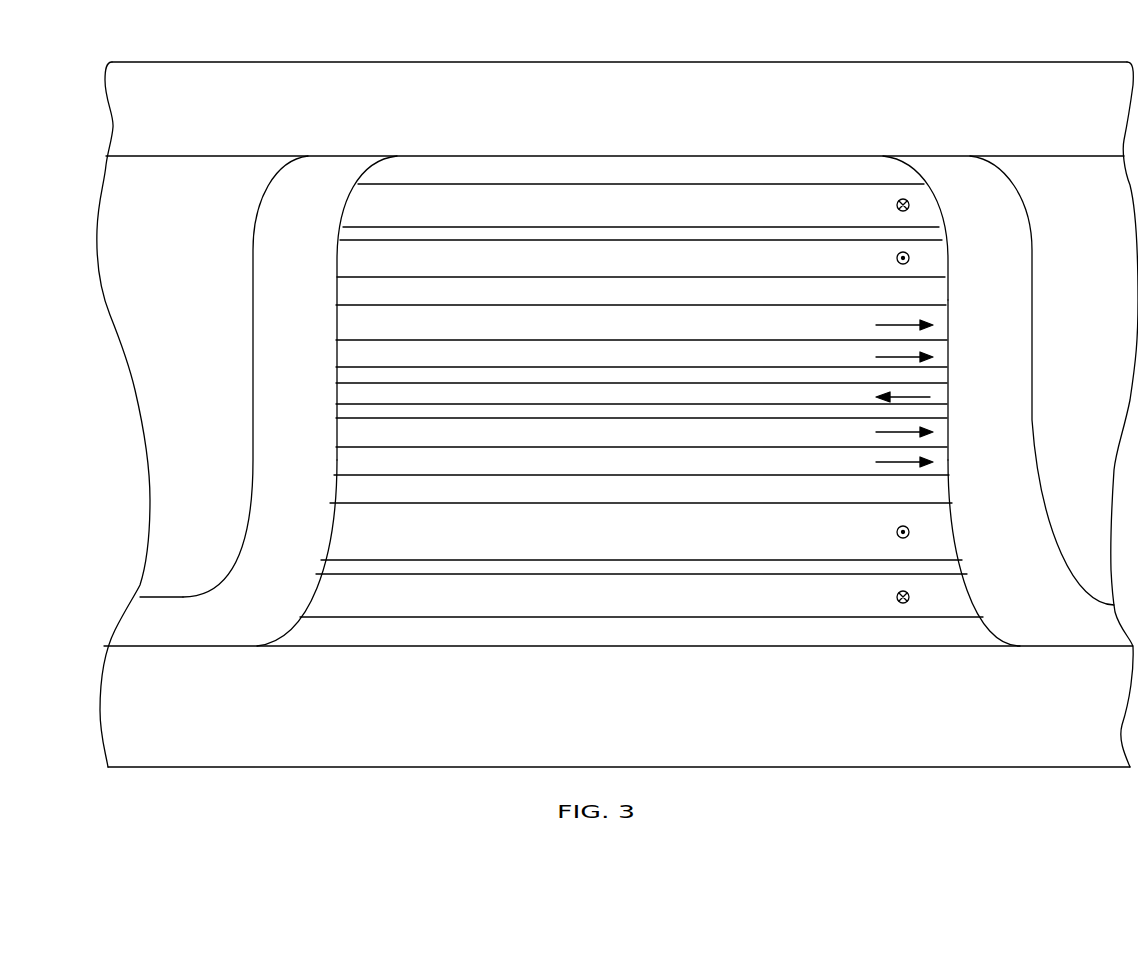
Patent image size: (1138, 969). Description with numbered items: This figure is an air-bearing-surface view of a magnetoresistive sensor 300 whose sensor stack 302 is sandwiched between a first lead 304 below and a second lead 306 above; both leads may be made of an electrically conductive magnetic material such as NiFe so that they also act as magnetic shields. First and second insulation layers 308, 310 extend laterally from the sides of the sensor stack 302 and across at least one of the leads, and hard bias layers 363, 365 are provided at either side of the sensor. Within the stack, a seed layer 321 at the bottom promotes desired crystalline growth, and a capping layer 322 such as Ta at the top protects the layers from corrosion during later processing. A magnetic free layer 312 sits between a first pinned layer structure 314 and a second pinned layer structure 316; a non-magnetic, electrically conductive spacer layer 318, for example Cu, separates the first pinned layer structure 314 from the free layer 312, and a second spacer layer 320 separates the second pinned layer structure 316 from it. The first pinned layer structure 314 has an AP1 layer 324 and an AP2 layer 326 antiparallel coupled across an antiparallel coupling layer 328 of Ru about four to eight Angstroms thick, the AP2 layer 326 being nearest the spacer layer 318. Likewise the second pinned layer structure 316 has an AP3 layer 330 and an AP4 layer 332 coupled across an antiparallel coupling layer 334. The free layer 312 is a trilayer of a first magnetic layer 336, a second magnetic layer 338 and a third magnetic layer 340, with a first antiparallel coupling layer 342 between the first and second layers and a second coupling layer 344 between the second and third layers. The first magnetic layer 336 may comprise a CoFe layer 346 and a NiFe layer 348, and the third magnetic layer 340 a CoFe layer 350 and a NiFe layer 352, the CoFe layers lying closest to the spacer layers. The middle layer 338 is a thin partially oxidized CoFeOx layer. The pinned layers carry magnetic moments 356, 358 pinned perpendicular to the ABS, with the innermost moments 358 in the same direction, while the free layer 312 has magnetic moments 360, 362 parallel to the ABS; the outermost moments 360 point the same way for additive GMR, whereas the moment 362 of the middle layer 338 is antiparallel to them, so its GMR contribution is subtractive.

The magnetoresistive sensor 300 is at (822, 49).
The sensor stack 302 is at (818, 156).
The first lead 304 is at (585, 711).
The second lead 306 is at (583, 121).
The first insulation layer 308 is at (1040, 622).
The second insulation layer 310 is at (246, 570).
The magnetic free layer 312 is at (988, 305).
The first pinned layer structure 314 is at (988, 505).
The second pinned layer structure 316 is at (988, 276).
The spacer layer 318 is at (585, 491).
The second spacer layer 320 is at (585, 291).
The seed layer 321 is at (585, 633).
The capping layer 322 is at (585, 168).
The AP1 layer 324 is at (585, 598).
The AP2 layer 326 is at (576, 533).
The antiparallel coupling layer 328 is at (423, 565).
The AP3 layer 330 is at (585, 259).
The AP4 layer 332 is at (585, 206).
The antiparallel coupling layer 334 is at (408, 231).
The first magnetic layer 336 is at (306, 474).
The second magnetic layer 338 is at (585, 394).
The third magnetic layer 340 is at (306, 368).
The first antiparallel coupling layer 342 is at (418, 411).
The second coupling layer 344 is at (410, 376).
The CoFe layer 346 is at (585, 461).
The NiFe layer 348 is at (585, 431).
The CoFe layer 350 is at (585, 324).
The NiFe layer 352 is at (585, 356).
The magnetic moment 356 is at (896, 206).
The innermost magnetic moment 358 is at (896, 259).
The outermost magnetic moment 360 is at (890, 325).
The magnetic moment 362 is at (894, 396).
The hard bias layer 363 is at (1053, 249).
The hard bias layer 365 is at (120, 290).